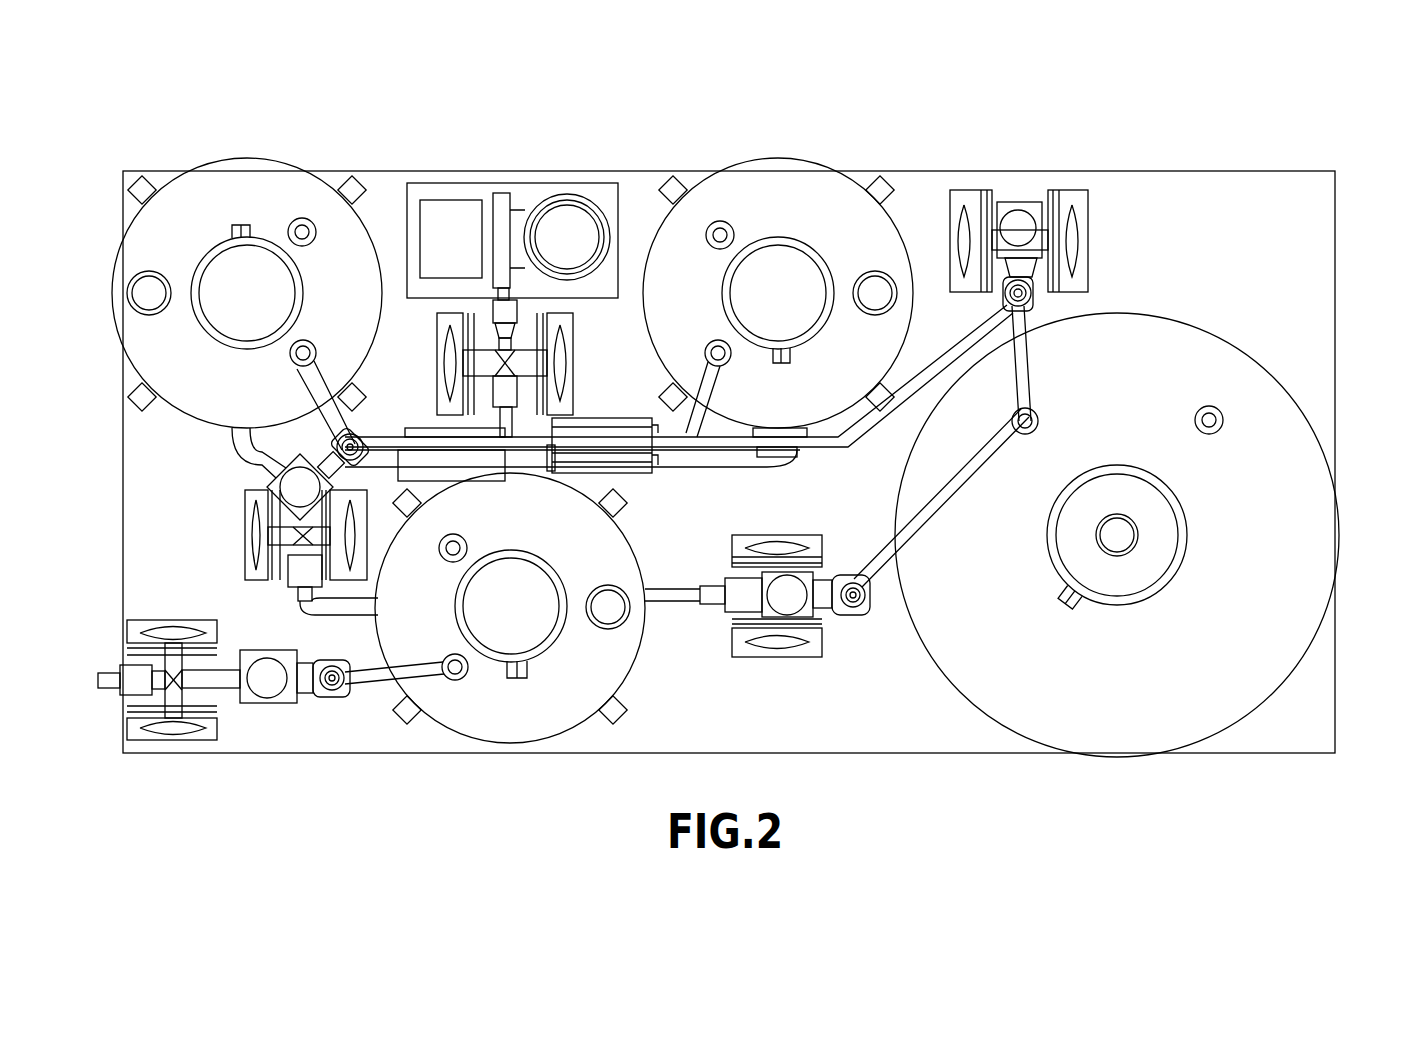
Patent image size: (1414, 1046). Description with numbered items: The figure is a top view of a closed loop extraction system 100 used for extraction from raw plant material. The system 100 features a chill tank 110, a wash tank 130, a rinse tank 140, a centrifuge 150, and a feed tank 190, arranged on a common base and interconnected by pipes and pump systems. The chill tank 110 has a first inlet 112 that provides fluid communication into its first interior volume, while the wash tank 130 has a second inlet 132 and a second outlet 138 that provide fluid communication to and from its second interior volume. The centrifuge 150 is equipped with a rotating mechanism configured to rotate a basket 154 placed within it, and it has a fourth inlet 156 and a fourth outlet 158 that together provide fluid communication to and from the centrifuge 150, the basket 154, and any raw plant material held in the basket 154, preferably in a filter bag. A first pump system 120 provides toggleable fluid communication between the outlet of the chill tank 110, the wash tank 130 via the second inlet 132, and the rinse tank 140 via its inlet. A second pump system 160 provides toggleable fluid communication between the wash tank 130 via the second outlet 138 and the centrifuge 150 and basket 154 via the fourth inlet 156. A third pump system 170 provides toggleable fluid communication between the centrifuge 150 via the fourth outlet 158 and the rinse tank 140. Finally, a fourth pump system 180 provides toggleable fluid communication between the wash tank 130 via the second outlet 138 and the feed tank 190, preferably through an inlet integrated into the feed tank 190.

The closed loop extraction system 100 is at (1405, 332).
The chill tank 110 is at (545, 758).
The first inlet 112 is at (455, 680).
The first pump system 120 is at (245, 535).
The wash tank 130 is at (108, 332).
The second inlet 132 is at (316, 349).
The second outlet 138 is at (236, 440).
The rinse tank 140 is at (825, 135).
The centrifuge 150 is at (494, 169).
The basket 154 is at (550, 203).
The fourth inlet 156 is at (573, 203).
The fourth outlet 158 is at (505, 293).
The second pump system 160 is at (441, 302).
The third pump system 170 is at (630, 170).
The fourth pump system 180 is at (740, 658).
The feed tank 190 is at (1069, 773).